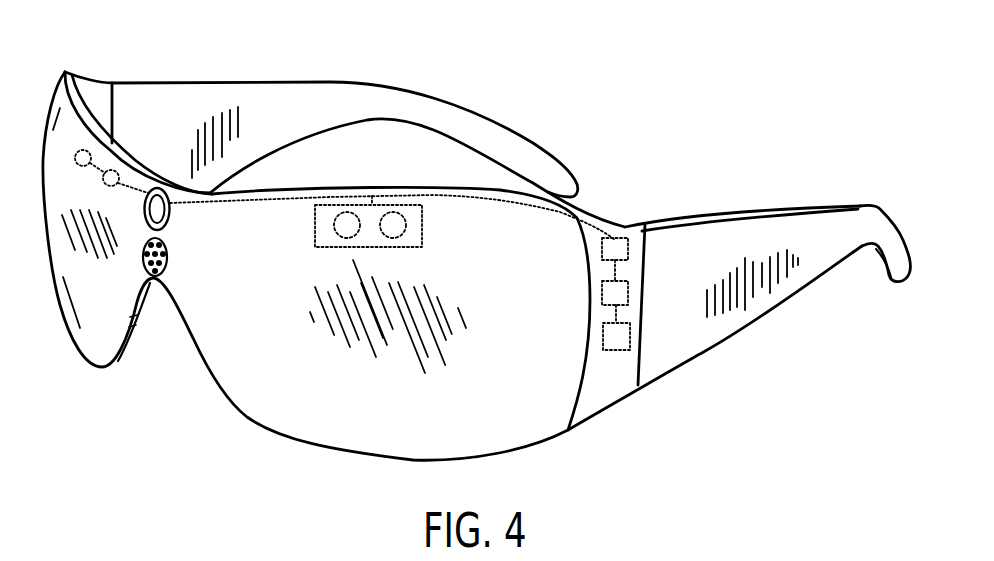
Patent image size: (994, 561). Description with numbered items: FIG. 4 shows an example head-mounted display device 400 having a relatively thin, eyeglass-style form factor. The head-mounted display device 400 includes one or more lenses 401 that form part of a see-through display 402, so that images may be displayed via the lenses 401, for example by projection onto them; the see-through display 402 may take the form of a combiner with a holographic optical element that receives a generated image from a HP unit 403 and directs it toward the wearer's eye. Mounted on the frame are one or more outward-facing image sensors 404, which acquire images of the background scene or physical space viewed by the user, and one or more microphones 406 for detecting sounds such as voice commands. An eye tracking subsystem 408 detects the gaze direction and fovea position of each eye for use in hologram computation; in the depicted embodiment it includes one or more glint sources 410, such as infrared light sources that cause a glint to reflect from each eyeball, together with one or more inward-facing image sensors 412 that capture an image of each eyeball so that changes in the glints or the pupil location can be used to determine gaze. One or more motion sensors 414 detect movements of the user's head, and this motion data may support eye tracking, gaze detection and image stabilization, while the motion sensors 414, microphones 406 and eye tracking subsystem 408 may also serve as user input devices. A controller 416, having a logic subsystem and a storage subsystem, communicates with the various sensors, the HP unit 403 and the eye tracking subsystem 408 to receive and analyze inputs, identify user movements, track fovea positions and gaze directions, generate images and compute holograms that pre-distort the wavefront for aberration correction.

The head-mounted display device 400 is at (723, 46).
The lenses 401 is at (406, 344).
The see-through display 402 is at (330, 468).
The HP unit 403 is at (630, 335).
The outward-facing image sensors 404 is at (222, 250).
The microphones 406 is at (215, 300).
The eye tracking subsystem 408 is at (422, 232).
The glint sources 410 is at (113, 171).
The image sensors 412 is at (87, 151).
The motion sensors 414 is at (630, 294).
The controller 416 is at (615, 237).